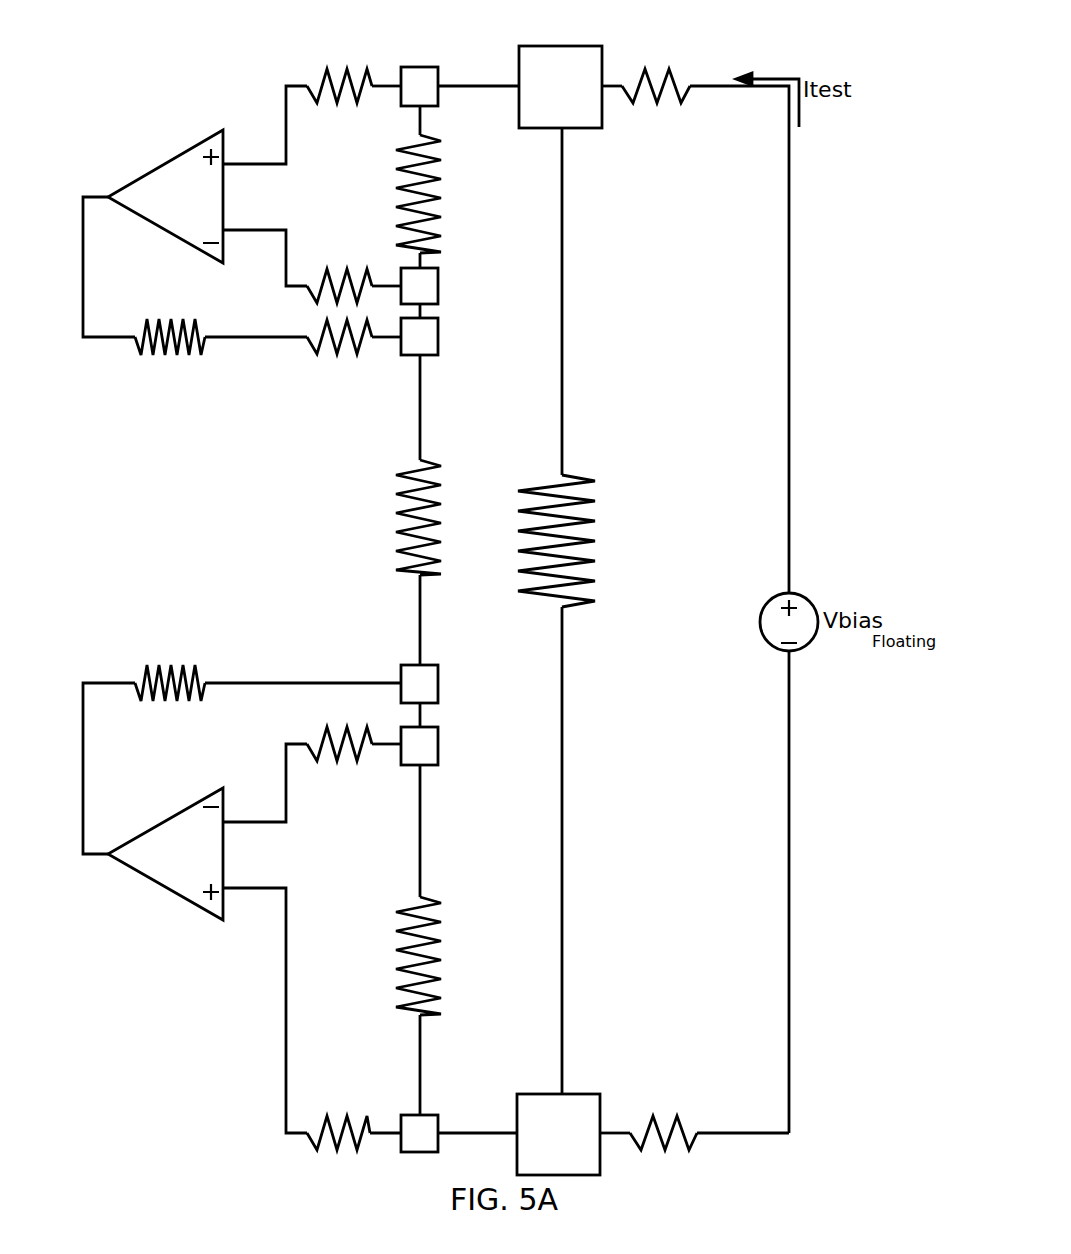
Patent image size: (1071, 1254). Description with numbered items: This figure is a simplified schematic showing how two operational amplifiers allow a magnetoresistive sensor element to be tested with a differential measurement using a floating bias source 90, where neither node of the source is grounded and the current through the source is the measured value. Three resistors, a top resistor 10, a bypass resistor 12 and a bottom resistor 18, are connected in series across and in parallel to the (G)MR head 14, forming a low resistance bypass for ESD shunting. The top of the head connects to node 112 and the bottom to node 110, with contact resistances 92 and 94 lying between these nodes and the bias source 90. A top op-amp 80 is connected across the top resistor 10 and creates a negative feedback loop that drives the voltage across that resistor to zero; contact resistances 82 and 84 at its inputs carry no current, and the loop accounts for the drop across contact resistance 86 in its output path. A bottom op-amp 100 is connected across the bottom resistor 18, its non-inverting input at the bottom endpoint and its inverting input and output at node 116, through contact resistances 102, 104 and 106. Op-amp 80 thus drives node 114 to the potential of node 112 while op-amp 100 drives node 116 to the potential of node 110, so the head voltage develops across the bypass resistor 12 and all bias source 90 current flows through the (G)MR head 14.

The top resistor 10 is at (395, 185).
The bypass resistor 12 is at (392, 493).
The (G)MR head 14 is at (585, 518).
The bottom resistor 18 is at (393, 911).
The top op-amp 80 is at (157, 172).
The contact resistance resistor 82 is at (345, 76).
The contact resistance resistor 84 is at (345, 278).
The contact resistance resistor 86 is at (150, 355).
The floating bias source 90 is at (793, 593).
The contact resistance resistor 92 is at (650, 80).
The contact resistance resistor 94 is at (667, 1142).
The bottom op-amp 100 is at (164, 884).
The contact resistance resistor 102 is at (148, 700).
The contact resistance resistor 104 is at (331, 756).
The contact resistance resistor 106 is at (331, 1147).
The node 110 is at (590, 1106).
The node 112 is at (586, 117).
The node 114 is at (432, 338).
The node 116 is at (436, 691).